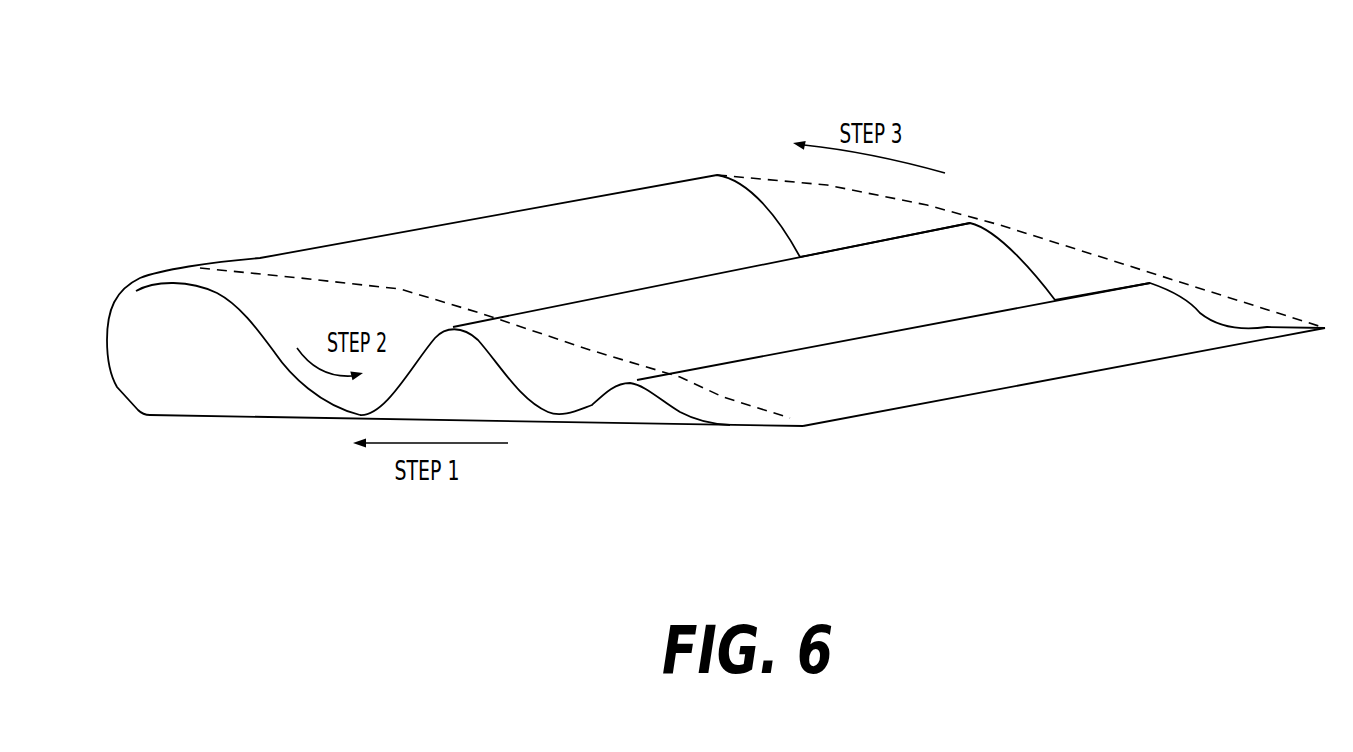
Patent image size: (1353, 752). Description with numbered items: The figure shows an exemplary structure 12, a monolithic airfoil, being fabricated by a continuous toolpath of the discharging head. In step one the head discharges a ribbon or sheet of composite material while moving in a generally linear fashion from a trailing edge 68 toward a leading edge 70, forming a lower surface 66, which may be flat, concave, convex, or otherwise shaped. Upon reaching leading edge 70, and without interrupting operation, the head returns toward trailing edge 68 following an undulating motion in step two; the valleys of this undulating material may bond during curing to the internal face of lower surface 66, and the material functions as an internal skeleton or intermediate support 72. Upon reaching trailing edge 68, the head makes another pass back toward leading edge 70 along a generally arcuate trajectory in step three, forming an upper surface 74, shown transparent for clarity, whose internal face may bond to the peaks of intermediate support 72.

The structure 12 is at (1169, 112).
The lower surface 66 is at (180, 417).
The trailing edge 68 is at (776, 449).
The leading edge 70 is at (117, 428).
The intermediate support 72 is at (613, 393).
The upper surface 74 is at (1090, 253).